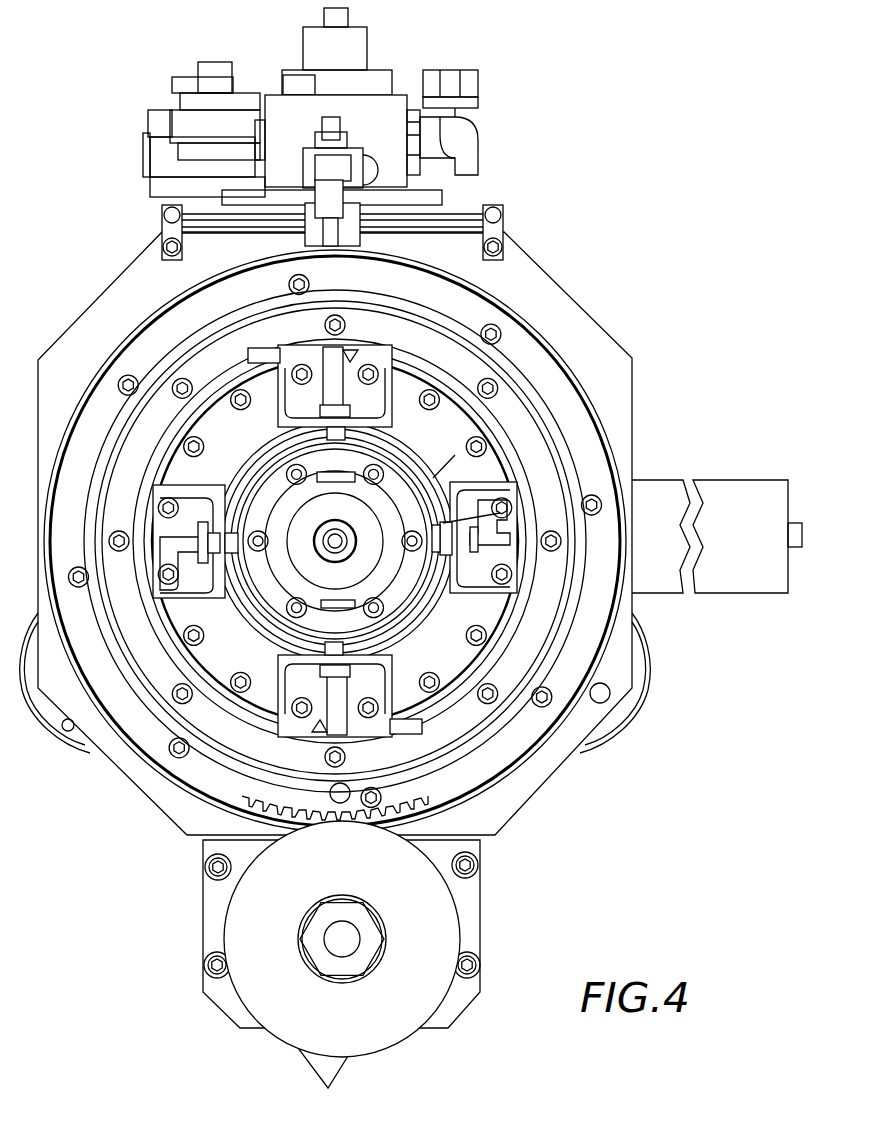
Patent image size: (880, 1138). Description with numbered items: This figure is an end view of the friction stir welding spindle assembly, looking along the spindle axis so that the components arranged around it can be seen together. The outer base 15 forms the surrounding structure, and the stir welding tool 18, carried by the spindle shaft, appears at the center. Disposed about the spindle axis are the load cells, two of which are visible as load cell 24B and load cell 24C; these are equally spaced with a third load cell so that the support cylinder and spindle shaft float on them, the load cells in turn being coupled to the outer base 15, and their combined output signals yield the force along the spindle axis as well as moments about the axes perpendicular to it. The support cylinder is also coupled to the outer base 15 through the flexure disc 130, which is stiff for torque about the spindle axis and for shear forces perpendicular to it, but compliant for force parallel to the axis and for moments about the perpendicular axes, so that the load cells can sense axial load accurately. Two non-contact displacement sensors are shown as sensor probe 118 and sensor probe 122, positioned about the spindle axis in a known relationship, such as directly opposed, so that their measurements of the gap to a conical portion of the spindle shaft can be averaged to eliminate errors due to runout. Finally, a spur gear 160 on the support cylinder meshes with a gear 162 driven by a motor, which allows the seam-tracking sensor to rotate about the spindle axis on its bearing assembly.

The outer base 15 is at (632, 397).
The stir welding tool 18 is at (332, 553).
The load cell 24B is at (63, 743).
The load cell 24C is at (652, 658).
The sensor probe 118 is at (385, 385).
The sensor probe 122 is at (177, 780).
The flexure disc 130 is at (487, 415).
The spur gear 160 is at (247, 782).
The gear 162 is at (445, 920).